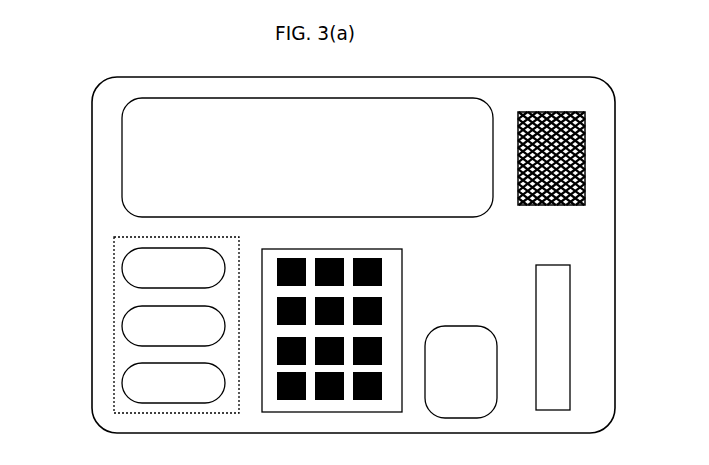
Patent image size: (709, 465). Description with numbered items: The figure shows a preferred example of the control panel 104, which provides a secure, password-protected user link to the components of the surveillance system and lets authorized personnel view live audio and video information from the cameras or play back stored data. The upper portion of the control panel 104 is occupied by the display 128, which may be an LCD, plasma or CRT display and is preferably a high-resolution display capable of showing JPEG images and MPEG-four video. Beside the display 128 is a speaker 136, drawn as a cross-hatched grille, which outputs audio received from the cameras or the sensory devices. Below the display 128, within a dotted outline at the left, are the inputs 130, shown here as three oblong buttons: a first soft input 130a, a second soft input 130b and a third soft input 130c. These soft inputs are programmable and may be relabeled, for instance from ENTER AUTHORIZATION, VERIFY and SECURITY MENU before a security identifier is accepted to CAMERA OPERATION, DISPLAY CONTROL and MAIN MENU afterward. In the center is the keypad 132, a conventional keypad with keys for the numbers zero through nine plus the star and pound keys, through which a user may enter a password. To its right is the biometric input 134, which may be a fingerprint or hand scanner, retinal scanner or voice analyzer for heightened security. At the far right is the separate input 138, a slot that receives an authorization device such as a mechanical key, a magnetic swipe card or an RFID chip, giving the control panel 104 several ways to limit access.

The control panel 104 is at (619, 99).
The display 128 is at (122, 158).
The inputs 130 is at (133, 306).
The first soft input 130a is at (122, 270).
The second soft input 130b is at (122, 328).
The third soft input 130c is at (122, 385).
The keypad 132 is at (404, 273).
The biometric input 134 is at (465, 326).
The speaker 136 is at (587, 157).
The separate input 138 is at (556, 265).